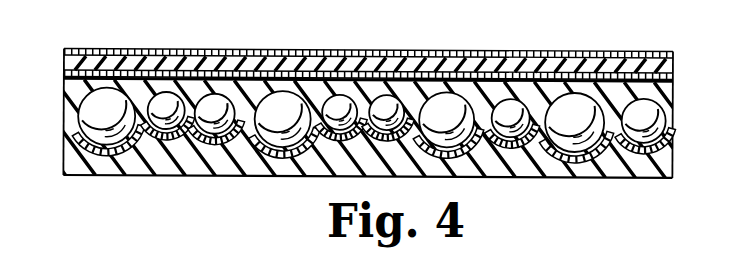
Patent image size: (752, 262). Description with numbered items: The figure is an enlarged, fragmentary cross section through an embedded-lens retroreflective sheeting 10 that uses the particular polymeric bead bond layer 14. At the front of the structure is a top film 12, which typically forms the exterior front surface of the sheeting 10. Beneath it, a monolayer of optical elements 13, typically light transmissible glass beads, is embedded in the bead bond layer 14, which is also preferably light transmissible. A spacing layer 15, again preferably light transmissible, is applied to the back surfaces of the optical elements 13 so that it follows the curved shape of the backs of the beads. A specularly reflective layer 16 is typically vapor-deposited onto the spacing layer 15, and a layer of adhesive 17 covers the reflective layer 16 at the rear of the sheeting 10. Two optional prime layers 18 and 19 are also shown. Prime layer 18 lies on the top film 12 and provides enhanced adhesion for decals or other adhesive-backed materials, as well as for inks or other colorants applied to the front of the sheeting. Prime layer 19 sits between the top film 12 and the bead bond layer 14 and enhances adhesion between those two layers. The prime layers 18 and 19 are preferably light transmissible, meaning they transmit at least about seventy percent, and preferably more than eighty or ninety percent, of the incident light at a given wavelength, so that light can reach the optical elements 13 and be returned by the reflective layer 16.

The sheeting 10 is at (108, 194).
The top film 12 is at (64, 61).
The optical elements 13 is at (632, 93).
The bead bond layer 14 is at (674, 90).
The spacing layer 15 is at (673, 140).
The specularly reflective layer 16 is at (110, 157).
The layer of adhesive 17 is at (209, 166).
The prime layer 18 is at (222, 50).
The prime layer 19 is at (277, 72).